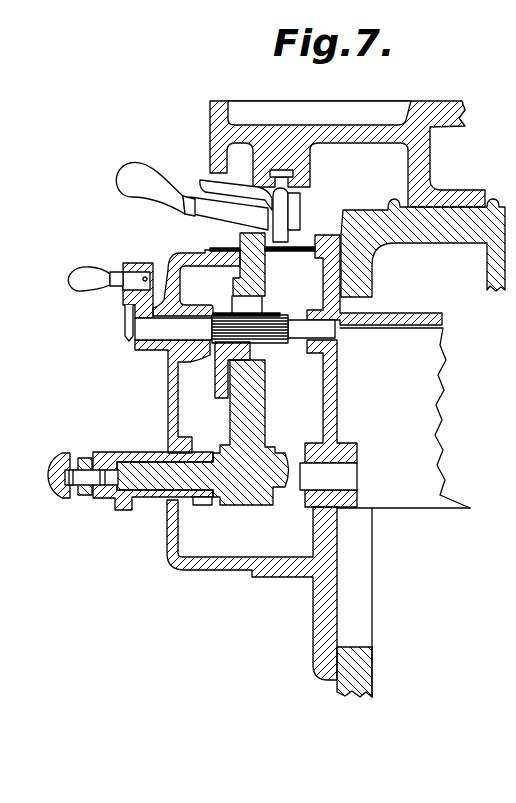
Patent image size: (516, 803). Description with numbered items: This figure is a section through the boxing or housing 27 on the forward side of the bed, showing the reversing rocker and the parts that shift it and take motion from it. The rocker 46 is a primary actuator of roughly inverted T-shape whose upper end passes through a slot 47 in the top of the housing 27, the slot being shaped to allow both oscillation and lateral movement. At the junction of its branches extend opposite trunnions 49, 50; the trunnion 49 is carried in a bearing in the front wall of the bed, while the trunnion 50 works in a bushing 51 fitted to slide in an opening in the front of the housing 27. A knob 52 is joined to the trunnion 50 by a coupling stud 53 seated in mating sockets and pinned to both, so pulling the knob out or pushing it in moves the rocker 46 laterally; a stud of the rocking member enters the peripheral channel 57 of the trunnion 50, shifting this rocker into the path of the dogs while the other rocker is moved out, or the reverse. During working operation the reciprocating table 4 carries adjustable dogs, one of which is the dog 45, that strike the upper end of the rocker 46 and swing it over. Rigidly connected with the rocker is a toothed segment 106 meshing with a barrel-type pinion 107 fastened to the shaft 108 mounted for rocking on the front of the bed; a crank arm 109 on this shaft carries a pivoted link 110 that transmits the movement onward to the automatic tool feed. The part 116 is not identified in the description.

The reciprocatory work-supporting table 4 is at (441, 122).
The boxing or housing 27 is at (190, 570).
The adjustable dog 45 is at (283, 218).
The rocker 46 is at (263, 358).
The slot 47 is at (378, 257).
The trunnion 49 is at (360, 473).
The trunnion 50 is at (133, 473).
The bushing 51 is at (150, 497).
The knob 52 is at (53, 453).
The coupling stud 53 is at (78, 485).
The peripheral channel 57 is at (208, 505).
The toothed segment 106 is at (215, 375).
The pinion 107 is at (272, 322).
The shaft 108 is at (235, 330).
The crank arm 109 is at (137, 262).
The link 110 is at (122, 320).
The bed 116 is at (426, 507).